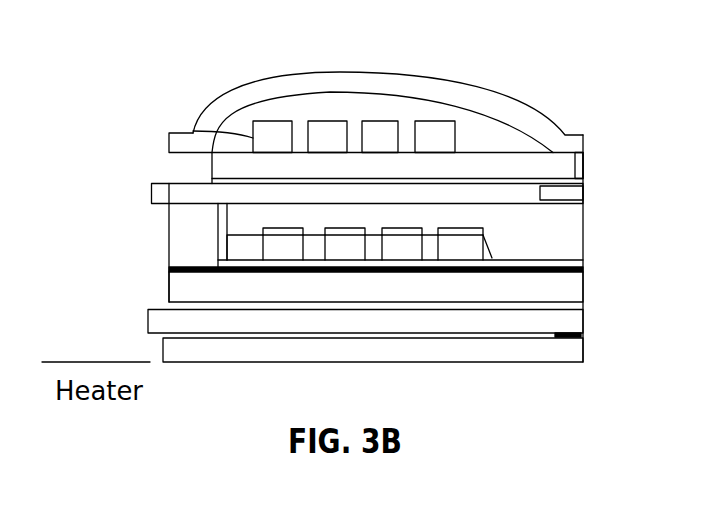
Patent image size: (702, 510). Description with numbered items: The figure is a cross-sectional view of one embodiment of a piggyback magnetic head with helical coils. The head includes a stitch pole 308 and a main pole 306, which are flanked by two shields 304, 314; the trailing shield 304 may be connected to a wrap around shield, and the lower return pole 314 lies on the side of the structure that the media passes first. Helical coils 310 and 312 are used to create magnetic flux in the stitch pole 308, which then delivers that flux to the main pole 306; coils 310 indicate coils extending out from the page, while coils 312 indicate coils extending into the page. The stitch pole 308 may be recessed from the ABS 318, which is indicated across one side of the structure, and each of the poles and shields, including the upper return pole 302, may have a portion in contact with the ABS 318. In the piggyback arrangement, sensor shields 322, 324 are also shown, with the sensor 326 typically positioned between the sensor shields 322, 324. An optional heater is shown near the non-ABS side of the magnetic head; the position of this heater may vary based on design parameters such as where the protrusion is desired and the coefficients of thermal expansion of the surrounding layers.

The upper return pole 302 is at (518, 104).
The trailing shield 304 is at (585, 165).
The main pole 306 is at (585, 192).
The stitch pole 308 is at (533, 204).
The helical coils 310 is at (192, 131).
The helical coils 312 is at (263, 224).
The lower return pole 314 is at (414, 296).
The ABS 318 is at (584, 273).
The sensor shield 322 is at (148, 309).
The sensor shield 324 is at (163, 348).
The sensor 326 is at (578, 334).